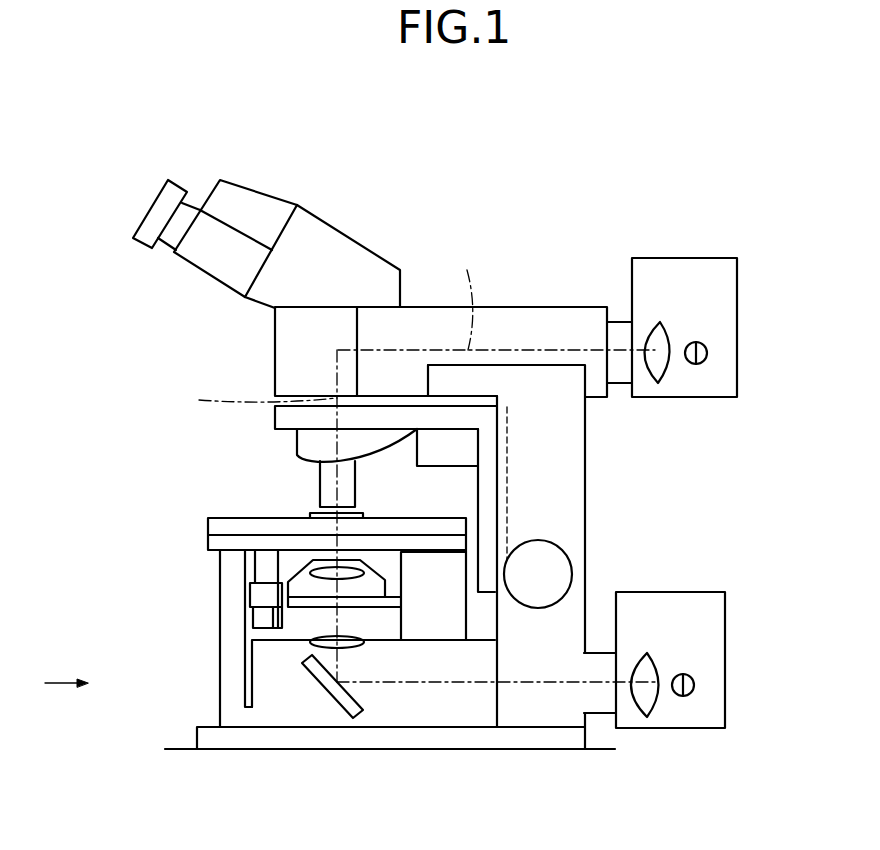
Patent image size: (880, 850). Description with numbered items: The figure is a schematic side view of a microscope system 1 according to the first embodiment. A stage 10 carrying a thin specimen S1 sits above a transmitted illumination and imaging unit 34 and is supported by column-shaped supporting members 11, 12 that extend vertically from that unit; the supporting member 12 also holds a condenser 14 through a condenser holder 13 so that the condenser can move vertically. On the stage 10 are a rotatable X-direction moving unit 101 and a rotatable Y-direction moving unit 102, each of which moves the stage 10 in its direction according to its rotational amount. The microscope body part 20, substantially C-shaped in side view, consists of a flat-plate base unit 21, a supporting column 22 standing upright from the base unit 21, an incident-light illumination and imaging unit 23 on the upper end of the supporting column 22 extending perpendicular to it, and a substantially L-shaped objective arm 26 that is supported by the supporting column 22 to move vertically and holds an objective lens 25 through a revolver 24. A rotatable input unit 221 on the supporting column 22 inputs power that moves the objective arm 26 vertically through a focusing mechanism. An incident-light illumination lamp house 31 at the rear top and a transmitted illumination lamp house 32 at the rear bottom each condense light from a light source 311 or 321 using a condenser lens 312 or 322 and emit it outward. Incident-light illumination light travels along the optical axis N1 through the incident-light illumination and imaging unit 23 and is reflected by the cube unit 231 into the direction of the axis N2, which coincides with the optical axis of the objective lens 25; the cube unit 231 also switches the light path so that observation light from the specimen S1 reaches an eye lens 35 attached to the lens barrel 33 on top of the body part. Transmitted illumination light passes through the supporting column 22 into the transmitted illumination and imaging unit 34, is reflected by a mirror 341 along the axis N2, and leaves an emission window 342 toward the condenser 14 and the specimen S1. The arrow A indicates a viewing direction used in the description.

The microscope system 1 is at (431, 164).
The stage 10 is at (208, 523).
The supporting member 11 is at (220, 688).
The supporting member 12 is at (441, 560).
The condenser holder 13 is at (373, 605).
The condenser 14 is at (288, 571).
The X-direction moving unit 101 is at (255, 598).
The Y-direction moving unit 102 is at (263, 620).
The microscope body part 20 is at (598, 434).
The base unit 21 is at (510, 737).
The supporting column 22 is at (568, 507).
The input unit 221 is at (562, 568).
The incident-light illumination and imaging unit 23 is at (556, 326).
The cube unit 231 is at (290, 352).
The revolver 24 is at (295, 443).
The objective lens 25 is at (318, 482).
The objective arm 26 is at (283, 415).
The incident-light illumination lamp house 31 is at (718, 297).
The light source 311 is at (708, 355).
The condenser lens 312 is at (668, 373).
The transmitted illumination lamp house 32 is at (712, 620).
The light source 321 is at (693, 687).
The condenser lens 322 is at (655, 703).
The lens barrel 33 is at (335, 248).
The transmitted illumination and imaging unit 34 is at (418, 706).
The mirror 341 is at (337, 695).
The emission window 342 is at (310, 643).
The eye lens 35 is at (163, 202).
The optical axis N1 is at (496, 464).
The axis N2 is at (252, 401).
The specimen S1 is at (365, 517).
The viewing direction A is at (54, 686).